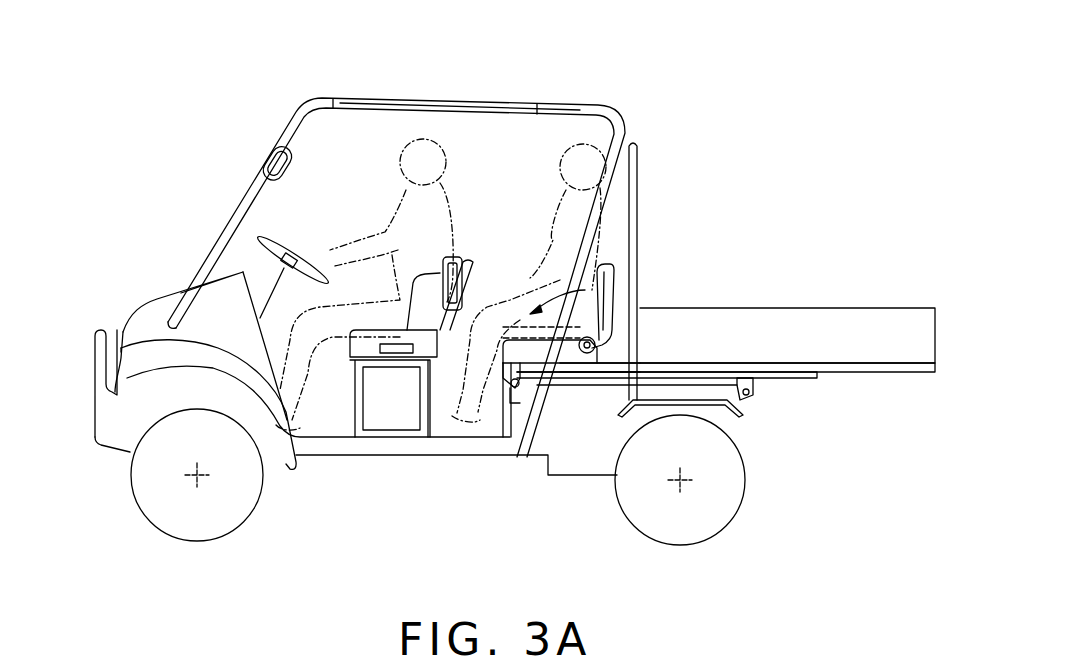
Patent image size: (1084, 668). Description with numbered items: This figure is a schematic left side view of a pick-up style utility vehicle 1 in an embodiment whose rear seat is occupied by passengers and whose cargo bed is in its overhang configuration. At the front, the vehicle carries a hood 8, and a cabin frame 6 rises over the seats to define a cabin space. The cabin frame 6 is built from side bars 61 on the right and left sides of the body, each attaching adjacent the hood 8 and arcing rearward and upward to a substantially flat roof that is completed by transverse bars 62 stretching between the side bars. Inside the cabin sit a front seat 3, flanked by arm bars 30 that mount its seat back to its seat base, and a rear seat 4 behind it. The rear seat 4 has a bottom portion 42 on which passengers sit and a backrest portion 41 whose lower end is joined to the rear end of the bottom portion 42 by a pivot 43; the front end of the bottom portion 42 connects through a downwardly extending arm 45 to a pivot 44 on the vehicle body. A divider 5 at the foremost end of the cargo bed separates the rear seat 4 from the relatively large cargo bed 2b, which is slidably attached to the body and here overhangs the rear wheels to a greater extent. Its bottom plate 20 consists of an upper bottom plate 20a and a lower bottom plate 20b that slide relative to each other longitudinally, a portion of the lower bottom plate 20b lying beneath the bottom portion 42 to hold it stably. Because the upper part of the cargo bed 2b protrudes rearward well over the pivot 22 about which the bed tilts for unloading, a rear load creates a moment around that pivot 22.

The utility vehicle 1 is at (207, 202).
The front seat 3 is at (447, 258).
The rear seat 4 is at (617, 273).
The divider 5 is at (640, 160).
The cabin frame 6 is at (612, 108).
The hood 8 is at (152, 302).
The cargo bed 2b is at (863, 307).
The bottom plate 20 is at (957, 437).
The upper bottom plate 20a is at (907, 374).
The lower bottom plate 20b is at (810, 380).
The pivot 22 is at (750, 398).
The arm bar 30 is at (352, 340).
The backrest portion 41 is at (613, 305).
The bottom portion 42 is at (563, 356).
The pivot 43 is at (587, 353).
The pivot 44 is at (513, 390).
The arm 45 is at (522, 362).
The side bar 61 is at (447, 100).
The transverse bar 62 is at (337, 103).